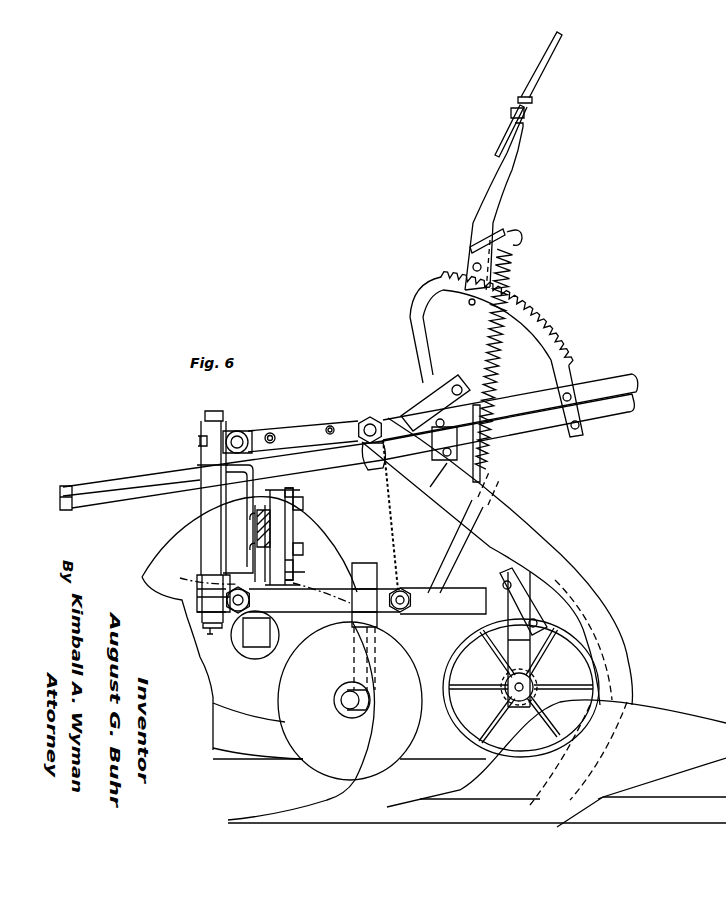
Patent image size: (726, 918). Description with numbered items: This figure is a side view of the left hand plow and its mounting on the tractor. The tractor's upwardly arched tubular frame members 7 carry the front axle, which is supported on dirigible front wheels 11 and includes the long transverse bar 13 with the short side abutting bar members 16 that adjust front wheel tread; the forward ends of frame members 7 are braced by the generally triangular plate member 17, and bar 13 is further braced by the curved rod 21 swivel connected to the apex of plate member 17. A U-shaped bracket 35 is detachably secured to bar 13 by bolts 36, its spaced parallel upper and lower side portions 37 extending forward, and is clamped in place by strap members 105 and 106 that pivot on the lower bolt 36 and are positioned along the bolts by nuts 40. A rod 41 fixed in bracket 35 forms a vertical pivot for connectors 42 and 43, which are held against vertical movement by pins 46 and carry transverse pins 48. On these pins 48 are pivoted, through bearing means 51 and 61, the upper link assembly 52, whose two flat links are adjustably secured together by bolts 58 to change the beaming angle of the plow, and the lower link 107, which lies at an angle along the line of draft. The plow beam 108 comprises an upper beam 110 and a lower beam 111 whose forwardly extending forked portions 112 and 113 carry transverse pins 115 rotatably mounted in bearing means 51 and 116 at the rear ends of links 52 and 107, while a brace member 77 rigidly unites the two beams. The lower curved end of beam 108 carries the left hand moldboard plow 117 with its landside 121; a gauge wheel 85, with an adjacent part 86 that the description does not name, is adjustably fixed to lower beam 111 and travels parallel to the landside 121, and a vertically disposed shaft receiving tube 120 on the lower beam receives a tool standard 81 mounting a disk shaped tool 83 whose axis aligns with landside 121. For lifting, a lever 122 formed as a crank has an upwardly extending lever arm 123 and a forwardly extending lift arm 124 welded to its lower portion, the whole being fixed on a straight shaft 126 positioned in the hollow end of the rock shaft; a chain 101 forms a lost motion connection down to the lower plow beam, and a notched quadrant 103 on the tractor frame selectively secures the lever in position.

The tubular frame members 7 is at (640, 396).
The dirigible front wheels 11 is at (177, 538).
The bar 13 is at (288, 540).
The side abutting bar members 16 is at (257, 538).
The plate member 17 is at (172, 470).
The curved rod 21 is at (95, 486).
The U-shaped bracket 35 is at (246, 543).
The bolts 36 is at (305, 548).
The upper and lower side portions 37 is at (241, 572).
The nuts 40 is at (295, 500).
The rod 41 is at (215, 411).
The connector 42 is at (202, 438).
The connector 43 is at (196, 588).
The pin 46 is at (211, 634).
The pin 48 is at (270, 433).
The bearing means 51 is at (366, 422).
The upper link assembly 52 is at (303, 428).
The bolts 58 is at (330, 426).
The bearing means 61 is at (255, 586).
The brace member 77 is at (460, 541).
The tool standard 81 is at (366, 565).
The disk shaped tool 83 is at (413, 736).
The gauge wheel 85 is at (521, 688).
The wheel standard 86 is at (531, 670).
The chain 101 is at (408, 522).
The notched quadrant 103 is at (571, 366).
The strap member 105 is at (298, 527).
The strap member 106 is at (305, 571).
The lower link 107 is at (298, 610).
The beam 108 is at (630, 663).
The upper beam 110 is at (545, 540).
The lower beam 111 is at (494, 590).
The forked portion 112 is at (412, 474).
The forked portion 113 is at (438, 614).
The transverse pins 115 is at (376, 421).
The bearing means 116 is at (406, 593).
The left hand moldboard plow 117 is at (556, 763).
The shaft receiving tube 120 is at (357, 626).
The landside 121 is at (662, 790).
The lever 122 is at (423, 392).
The lever arm 123 is at (510, 180).
The lift arm 124 is at (380, 466).
The straight shaft 126 is at (458, 384).